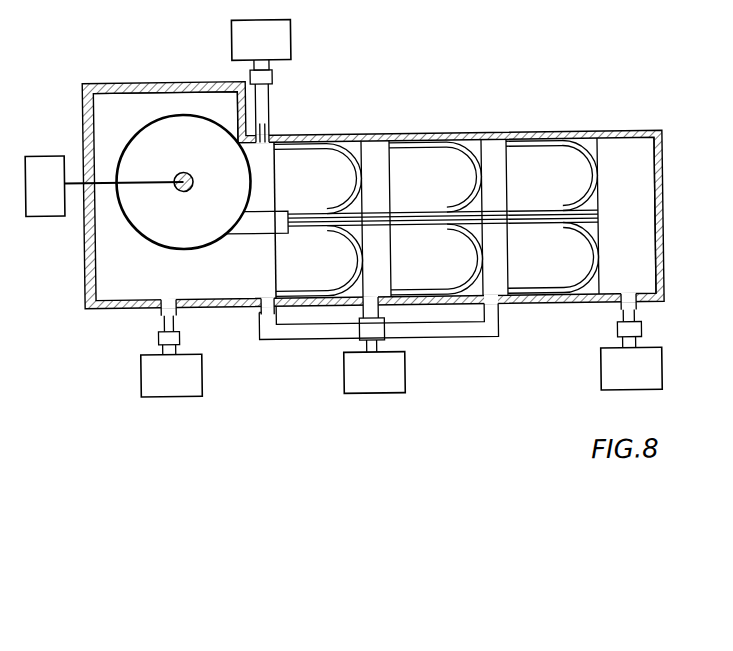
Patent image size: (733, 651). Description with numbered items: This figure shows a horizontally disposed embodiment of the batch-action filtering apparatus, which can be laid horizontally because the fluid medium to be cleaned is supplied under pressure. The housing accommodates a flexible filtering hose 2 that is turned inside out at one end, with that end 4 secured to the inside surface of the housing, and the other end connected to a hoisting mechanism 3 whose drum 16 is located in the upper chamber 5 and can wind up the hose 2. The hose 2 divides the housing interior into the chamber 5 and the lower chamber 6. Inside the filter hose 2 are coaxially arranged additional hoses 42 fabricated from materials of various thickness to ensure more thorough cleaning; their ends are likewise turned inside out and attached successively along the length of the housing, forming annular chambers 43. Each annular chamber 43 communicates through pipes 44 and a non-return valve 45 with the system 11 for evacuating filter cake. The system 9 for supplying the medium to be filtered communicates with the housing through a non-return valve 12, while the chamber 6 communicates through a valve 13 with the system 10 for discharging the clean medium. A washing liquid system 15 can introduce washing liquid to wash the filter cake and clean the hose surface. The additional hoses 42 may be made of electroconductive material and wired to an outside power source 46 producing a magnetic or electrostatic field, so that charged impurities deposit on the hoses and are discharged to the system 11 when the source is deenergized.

The filtering element (hose) 2 is at (308, 210).
The hoisting mechanism 3 is at (152, 104).
The end of the hose 4 is at (295, 135).
The upper chamber 5 is at (262, 158).
The lower chamber 6 is at (632, 160).
The system for supplying the medium to be filtered 9 is at (146, 366).
The system for discharging the clean medium 10 is at (600, 367).
The system for evacuating filter cake 11 is at (350, 375).
The non-return valve 12 is at (157, 331).
The valve 13 is at (616, 332).
The washing liquid system 15 is at (293, 35).
The drum 16 is at (139, 119).
The additional hoses 42 is at (477, 150).
The annular chambers 43 is at (372, 164).
The pipes 44 is at (258, 317).
The non-return valve 45 is at (362, 328).
The outside power source 46 is at (49, 205).